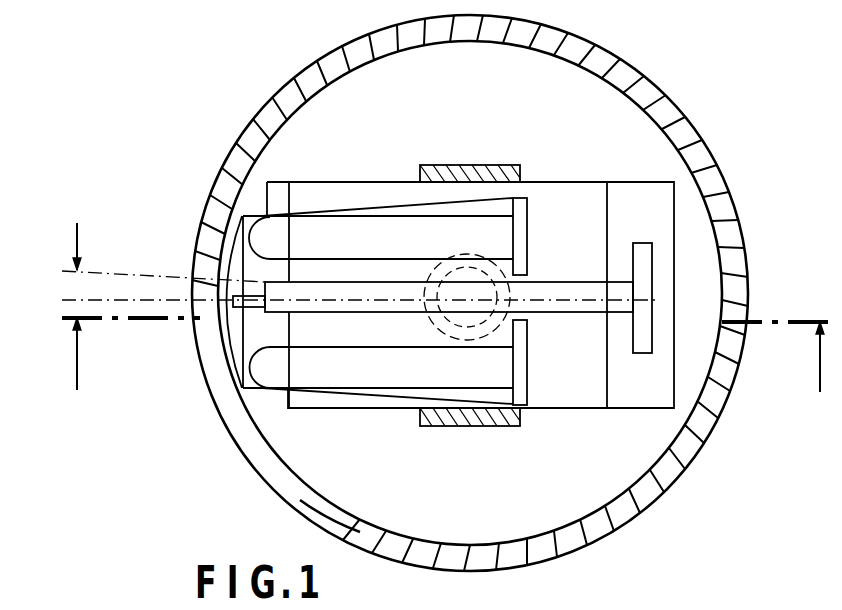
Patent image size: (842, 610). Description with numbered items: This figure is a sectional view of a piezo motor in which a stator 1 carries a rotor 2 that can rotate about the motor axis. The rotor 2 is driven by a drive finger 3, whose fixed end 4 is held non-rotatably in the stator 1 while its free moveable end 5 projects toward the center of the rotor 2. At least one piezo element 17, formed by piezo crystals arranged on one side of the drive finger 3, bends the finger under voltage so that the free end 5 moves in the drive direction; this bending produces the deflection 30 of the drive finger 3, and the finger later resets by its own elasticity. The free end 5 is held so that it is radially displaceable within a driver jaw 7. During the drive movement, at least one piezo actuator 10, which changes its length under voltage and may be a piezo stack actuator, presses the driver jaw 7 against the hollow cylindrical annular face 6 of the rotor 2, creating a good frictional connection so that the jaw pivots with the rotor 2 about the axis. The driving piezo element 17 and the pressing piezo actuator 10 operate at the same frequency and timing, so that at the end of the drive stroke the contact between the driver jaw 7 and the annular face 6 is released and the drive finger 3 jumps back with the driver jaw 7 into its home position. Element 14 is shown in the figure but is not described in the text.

The stator 1 is at (643, 192).
The rotor 2 is at (725, 210).
The drive finger 3 is at (363, 303).
The fixed end 4 is at (640, 293).
The free moveable end 5 is at (240, 316).
The annular face 6 is at (336, 490).
The driver jaw 7 is at (229, 256).
The piezo actuator 10 is at (278, 243).
The insert 14 is at (490, 168).
The piezo element 17 is at (542, 280).
The deflection 30 is at (77, 290).